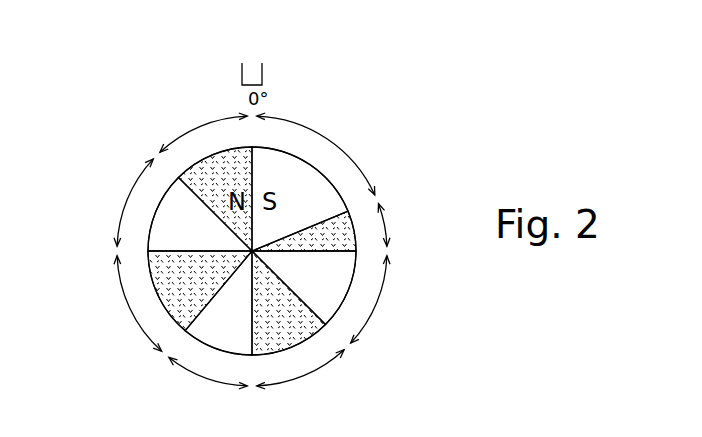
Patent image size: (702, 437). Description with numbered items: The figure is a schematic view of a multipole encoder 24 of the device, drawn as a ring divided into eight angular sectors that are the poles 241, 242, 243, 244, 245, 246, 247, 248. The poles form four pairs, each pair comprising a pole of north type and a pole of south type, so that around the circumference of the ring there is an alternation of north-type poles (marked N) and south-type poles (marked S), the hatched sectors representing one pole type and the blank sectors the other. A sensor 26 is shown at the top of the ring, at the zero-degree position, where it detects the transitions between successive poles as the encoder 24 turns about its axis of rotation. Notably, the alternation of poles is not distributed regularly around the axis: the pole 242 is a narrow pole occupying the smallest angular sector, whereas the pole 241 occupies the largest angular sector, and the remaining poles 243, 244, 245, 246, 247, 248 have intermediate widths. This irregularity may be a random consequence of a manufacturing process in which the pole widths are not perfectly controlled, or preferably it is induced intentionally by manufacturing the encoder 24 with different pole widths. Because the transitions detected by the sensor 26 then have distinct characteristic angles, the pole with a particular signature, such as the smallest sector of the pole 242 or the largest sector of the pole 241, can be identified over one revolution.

The encoder 24 is at (400, 145).
The sensor 26 is at (263, 76).
The pole 241 is at (292, 178).
The pole 242 is at (340, 233).
The pole 243 is at (323, 282).
The pole 244 is at (280, 328).
The pole 245 is at (223, 330).
The pole 246 is at (178, 285).
The pole 247 is at (185, 227).
The pole 248 is at (216, 178).